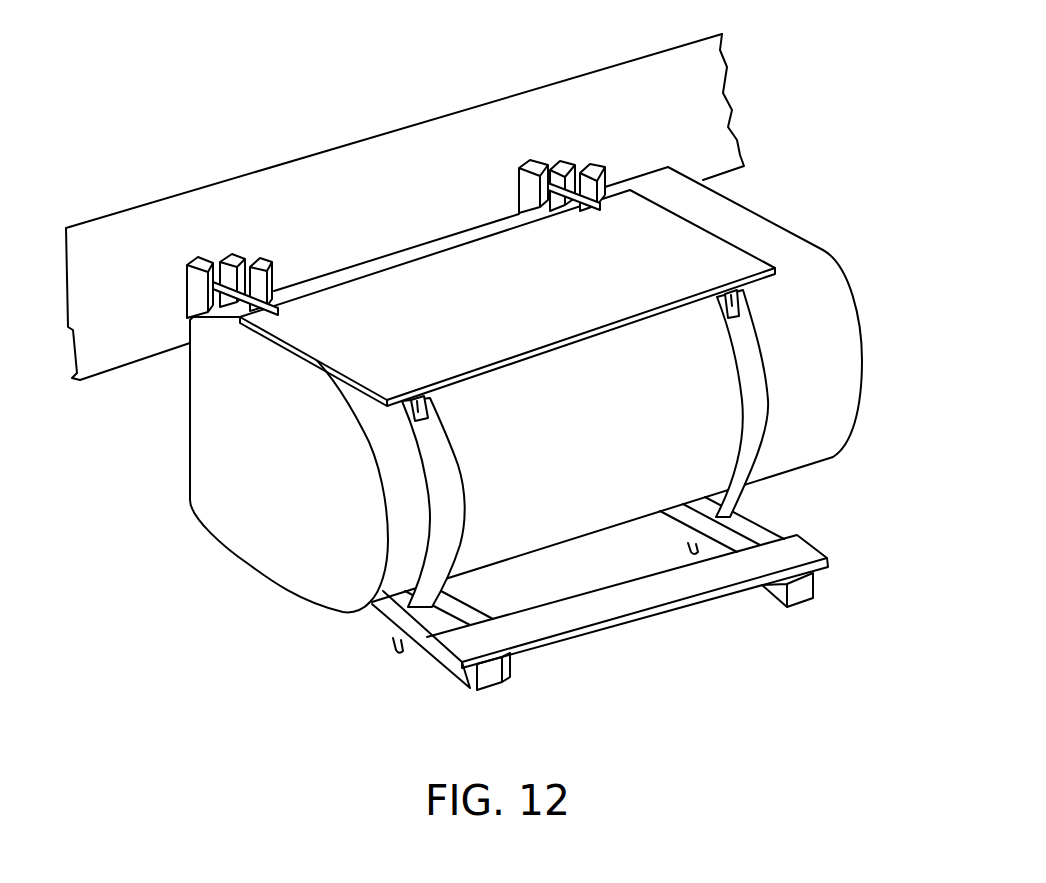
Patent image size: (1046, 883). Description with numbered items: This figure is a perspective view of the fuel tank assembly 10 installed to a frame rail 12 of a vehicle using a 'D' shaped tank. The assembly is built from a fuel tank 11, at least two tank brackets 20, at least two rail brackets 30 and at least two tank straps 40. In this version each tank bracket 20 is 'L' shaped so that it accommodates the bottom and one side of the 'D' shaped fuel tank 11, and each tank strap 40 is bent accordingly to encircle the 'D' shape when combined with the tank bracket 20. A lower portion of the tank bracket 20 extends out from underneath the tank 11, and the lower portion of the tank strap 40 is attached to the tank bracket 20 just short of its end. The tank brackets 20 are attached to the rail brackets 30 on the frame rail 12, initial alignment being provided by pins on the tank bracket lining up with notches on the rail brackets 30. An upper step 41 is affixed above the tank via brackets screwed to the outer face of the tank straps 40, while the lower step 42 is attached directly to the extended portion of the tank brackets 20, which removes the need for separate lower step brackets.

The fuel tank assembly 10 is at (896, 678).
The fuel tank 11 is at (290, 510).
The wall 12 is at (368, 176).
The tank bracket 20 is at (258, 254).
The rail bracket 30 is at (194, 246).
The tank strap 40 is at (752, 377).
The upper step 41 is at (481, 308).
The lower step 42 is at (637, 597).